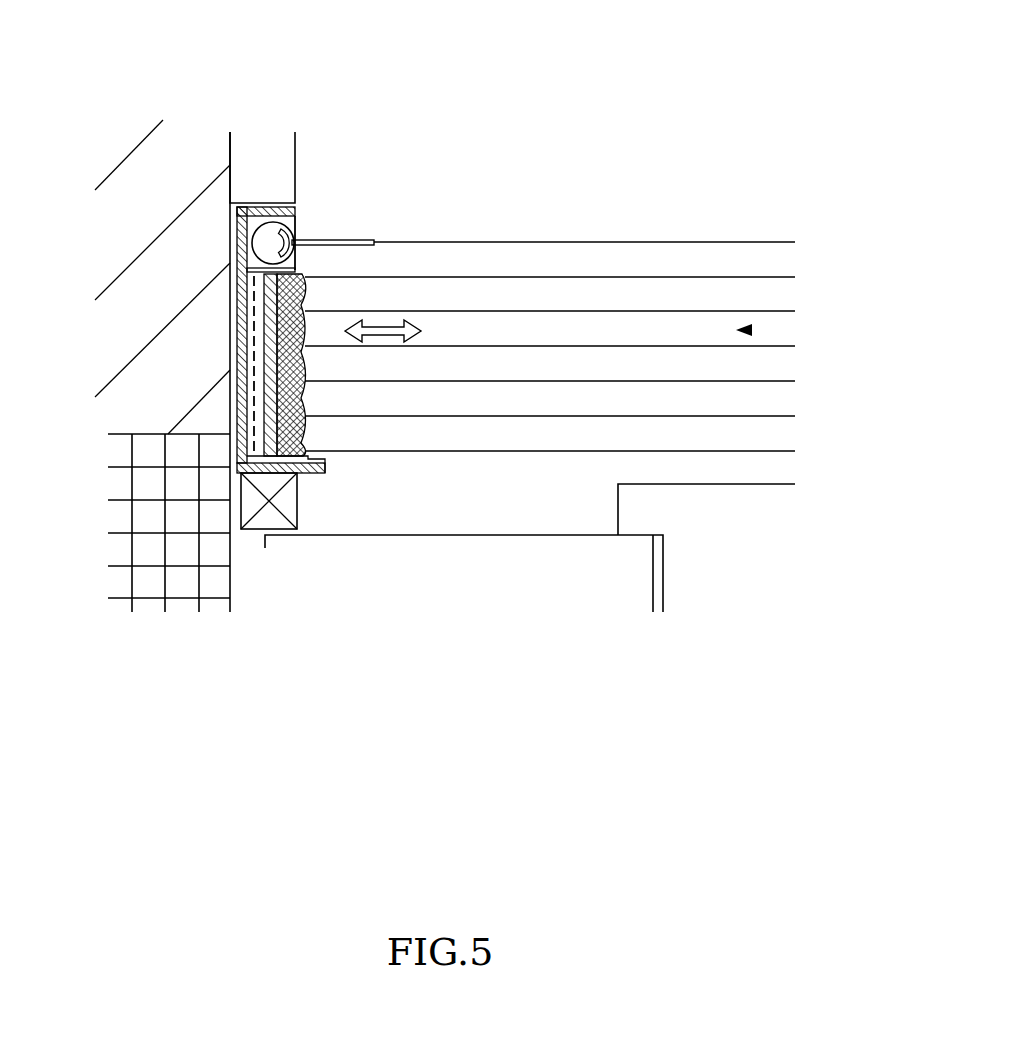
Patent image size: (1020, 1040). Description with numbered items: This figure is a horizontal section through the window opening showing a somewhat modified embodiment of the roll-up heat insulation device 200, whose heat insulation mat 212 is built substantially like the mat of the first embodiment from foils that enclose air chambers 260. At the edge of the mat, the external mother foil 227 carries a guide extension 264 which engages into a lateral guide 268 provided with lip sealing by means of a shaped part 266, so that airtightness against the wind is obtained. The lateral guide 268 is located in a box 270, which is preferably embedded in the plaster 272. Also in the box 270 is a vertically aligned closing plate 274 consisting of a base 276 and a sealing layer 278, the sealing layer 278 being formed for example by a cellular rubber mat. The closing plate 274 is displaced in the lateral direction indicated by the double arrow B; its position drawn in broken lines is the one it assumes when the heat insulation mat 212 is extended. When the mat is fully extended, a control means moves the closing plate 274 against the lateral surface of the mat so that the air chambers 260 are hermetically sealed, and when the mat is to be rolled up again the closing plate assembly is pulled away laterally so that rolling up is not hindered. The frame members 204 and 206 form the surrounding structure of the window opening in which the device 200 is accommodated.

The heat insulation device 200 is at (636, 184).
The lower frame member 204 is at (519, 583).
The frame member 206 is at (688, 527).
The heat insulation mat 212 is at (748, 330).
The external mother foil 227 is at (667, 241).
The air chambers 260 is at (670, 335).
The guide extension 264 is at (372, 238).
The shaped part 266 is at (297, 227).
The lateral guide 268 is at (233, 253).
The box 270 is at (247, 316).
The plaster 272 is at (270, 148).
The closing plate 274 is at (272, 393).
The base 276 is at (272, 357).
The sealing layer 278 is at (550, 417).
The double arrow B is at (372, 327).